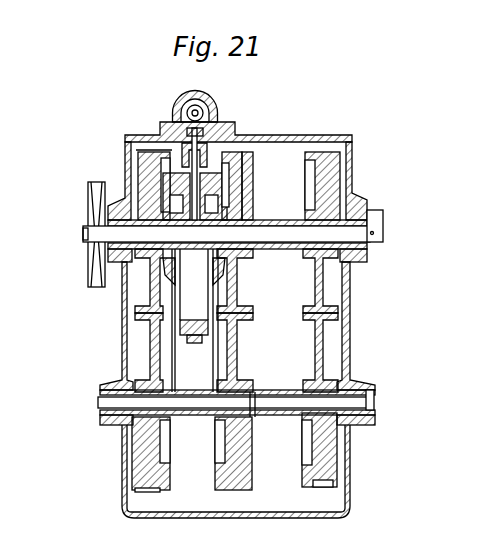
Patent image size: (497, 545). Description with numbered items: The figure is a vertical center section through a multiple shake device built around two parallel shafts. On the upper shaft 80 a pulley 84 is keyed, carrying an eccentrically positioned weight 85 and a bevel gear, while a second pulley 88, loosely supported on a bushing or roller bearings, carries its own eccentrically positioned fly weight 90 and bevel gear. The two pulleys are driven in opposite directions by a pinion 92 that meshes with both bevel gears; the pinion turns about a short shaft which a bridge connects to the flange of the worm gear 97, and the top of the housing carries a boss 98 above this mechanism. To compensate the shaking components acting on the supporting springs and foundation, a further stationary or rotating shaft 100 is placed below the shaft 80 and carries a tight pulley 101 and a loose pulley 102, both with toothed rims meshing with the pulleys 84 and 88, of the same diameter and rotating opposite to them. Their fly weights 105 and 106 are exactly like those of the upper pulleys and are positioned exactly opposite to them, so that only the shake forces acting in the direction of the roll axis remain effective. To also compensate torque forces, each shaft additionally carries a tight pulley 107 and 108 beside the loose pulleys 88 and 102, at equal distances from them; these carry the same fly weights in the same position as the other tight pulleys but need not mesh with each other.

The shaft 80 is at (353, 233).
The pulley 84 is at (350, 148).
The eccentrically positioned weight 85 is at (148, 182).
The pulley 88 is at (243, 293).
The eccentrically positioned fly weight 90 is at (253, 185).
The pinion 92 is at (240, 152).
The worm gear 97 is at (183, 330).
The pivot boss 98 is at (210, 103).
The further stationary or rotating shaft 100 is at (103, 403).
The tight pulley 101 is at (160, 352).
The loose pulley 102 is at (240, 363).
The fly weight 105 is at (140, 460).
The fly weight 106 is at (250, 458).
The tight pulley 107 is at (337, 308).
The tight pulley 108 is at (337, 442).